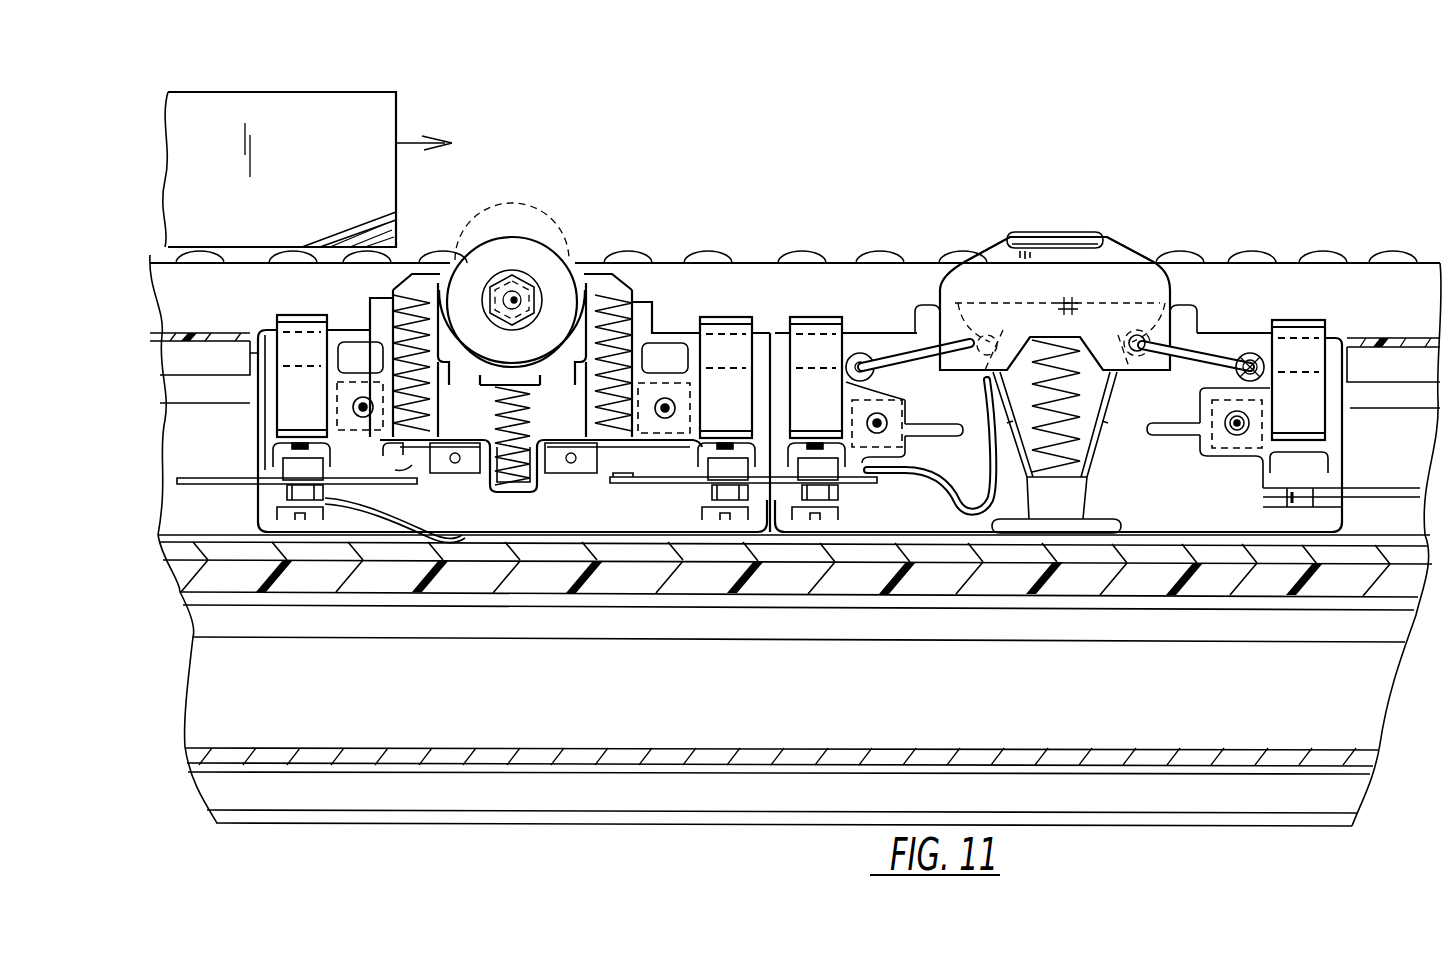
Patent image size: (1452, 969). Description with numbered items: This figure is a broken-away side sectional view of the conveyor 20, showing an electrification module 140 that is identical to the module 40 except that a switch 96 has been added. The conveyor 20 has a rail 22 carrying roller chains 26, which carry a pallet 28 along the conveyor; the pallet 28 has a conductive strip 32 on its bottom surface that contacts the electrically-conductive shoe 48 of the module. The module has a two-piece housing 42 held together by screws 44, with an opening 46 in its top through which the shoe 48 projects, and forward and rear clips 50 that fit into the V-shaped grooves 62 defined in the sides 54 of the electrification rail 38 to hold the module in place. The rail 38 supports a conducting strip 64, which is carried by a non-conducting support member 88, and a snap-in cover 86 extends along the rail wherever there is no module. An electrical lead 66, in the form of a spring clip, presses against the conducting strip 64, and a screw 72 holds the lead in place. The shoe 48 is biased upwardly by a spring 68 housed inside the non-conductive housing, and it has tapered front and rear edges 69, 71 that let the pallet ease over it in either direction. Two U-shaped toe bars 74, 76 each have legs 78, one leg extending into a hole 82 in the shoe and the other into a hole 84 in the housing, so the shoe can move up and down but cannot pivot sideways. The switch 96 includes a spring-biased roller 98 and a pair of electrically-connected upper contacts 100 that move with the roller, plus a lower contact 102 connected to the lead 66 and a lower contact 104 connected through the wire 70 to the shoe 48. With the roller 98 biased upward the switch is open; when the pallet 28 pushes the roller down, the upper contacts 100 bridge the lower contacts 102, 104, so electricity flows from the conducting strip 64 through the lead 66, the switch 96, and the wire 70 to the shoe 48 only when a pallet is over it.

The conveyor 20 is at (1333, 199).
The left rail 22 is at (1440, 262).
The roller chains 26 is at (722, 251).
The pallet 28 is at (362, 92).
The conductive strip 32 is at (398, 244).
The electrification rail 38 is at (1400, 446).
The module 40 is at (1338, 463).
The two-piece housing 42 is at (1185, 510).
The screws 44 is at (363, 398).
The opening 46 is at (1188, 306).
The shoe 48 is at (1110, 237).
The clips 50 is at (300, 316).
The side 54 is at (164, 387).
The V-shaped groove 62 is at (232, 403).
The conducting strip 64 is at (162, 550).
The electrical lead 66 is at (405, 523).
The spring 68 is at (1090, 456).
The tapered front edge 69 is at (984, 252).
The wire 70 is at (945, 489).
The tapered rear edge 71 is at (1128, 252).
The screw 72 is at (283, 511).
The forward toe bar 74 is at (895, 355).
The rear toe bar 76 is at (1193, 372).
The legs 78 is at (1136, 352).
The hole in shoe 82 is at (991, 332).
The hole in housing 84 is at (857, 352).
The snap-in cover 86 is at (215, 333).
The support member 88 is at (172, 578).
The switch 96 is at (568, 241).
The roller 98 is at (520, 236).
The upper contacts 100 is at (418, 470).
The lower contact 102 is at (395, 470).
The lower contact 104 is at (613, 479).
The module 140 is at (1057, 221).